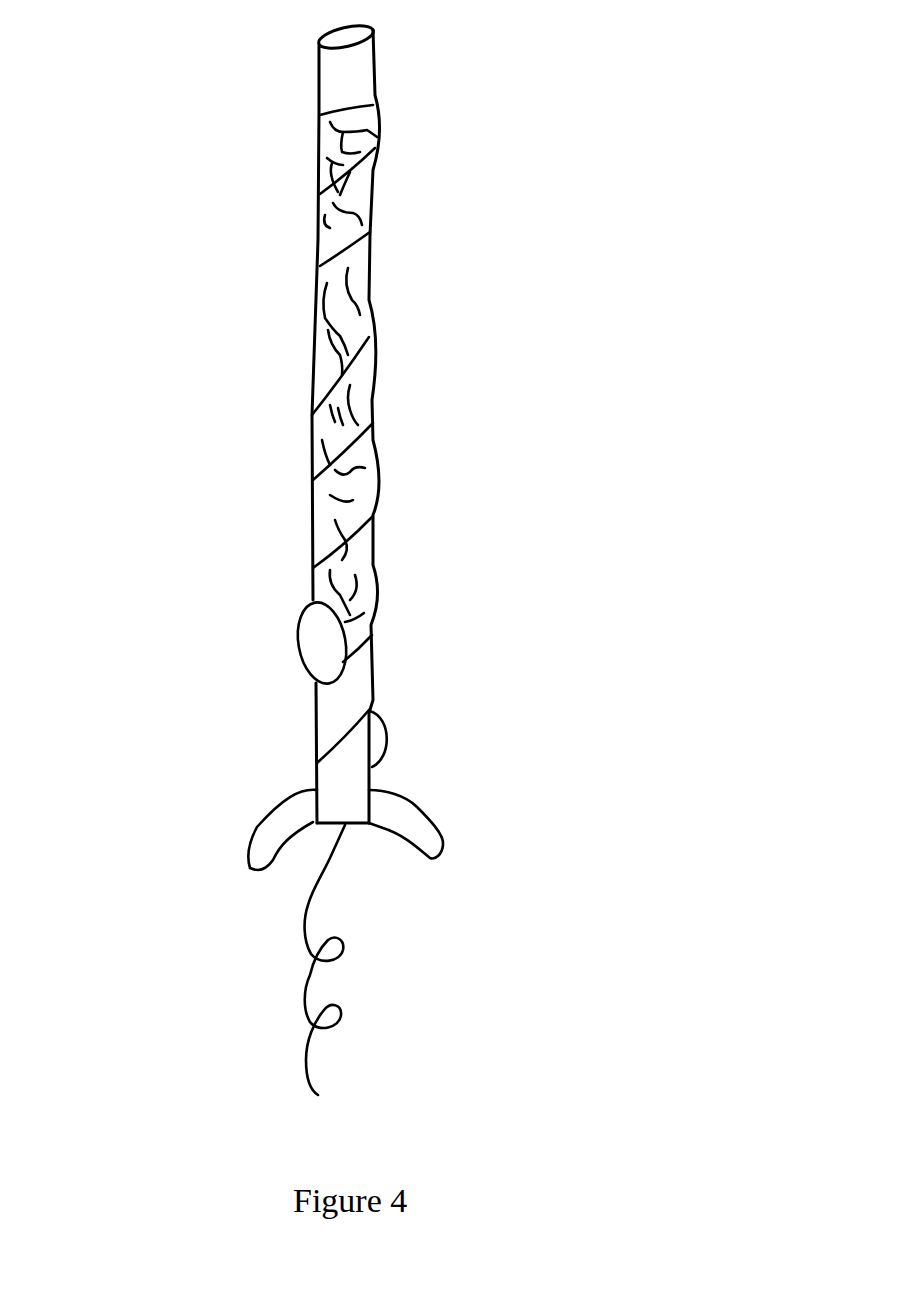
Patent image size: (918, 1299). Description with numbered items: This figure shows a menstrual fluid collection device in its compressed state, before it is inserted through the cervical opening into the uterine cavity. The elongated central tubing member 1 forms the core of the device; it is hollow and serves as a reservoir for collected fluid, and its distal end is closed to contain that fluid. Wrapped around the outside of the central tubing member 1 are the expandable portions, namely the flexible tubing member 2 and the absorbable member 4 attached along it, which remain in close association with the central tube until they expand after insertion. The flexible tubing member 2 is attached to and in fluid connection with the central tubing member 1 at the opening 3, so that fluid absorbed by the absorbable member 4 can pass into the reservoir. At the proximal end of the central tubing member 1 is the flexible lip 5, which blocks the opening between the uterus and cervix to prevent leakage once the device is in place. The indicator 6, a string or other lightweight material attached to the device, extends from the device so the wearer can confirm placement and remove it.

The central tubing member 1 is at (358, 65).
The flexible tubing member 2 is at (367, 683).
The opening 3 is at (368, 768).
The absorbable member 4 is at (313, 503).
The flexible lip 5 is at (427, 812).
The indicator 6 is at (308, 980).